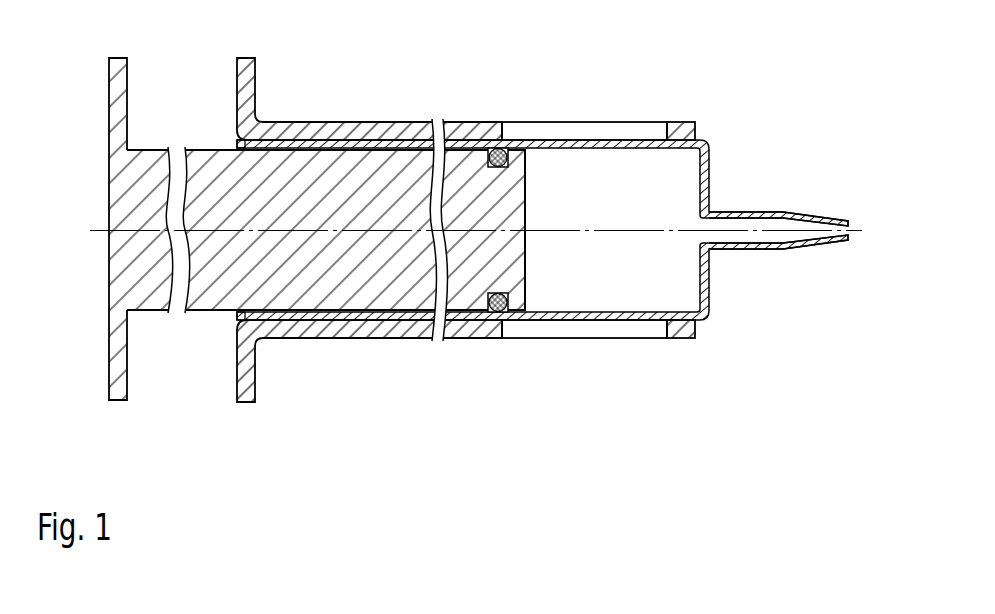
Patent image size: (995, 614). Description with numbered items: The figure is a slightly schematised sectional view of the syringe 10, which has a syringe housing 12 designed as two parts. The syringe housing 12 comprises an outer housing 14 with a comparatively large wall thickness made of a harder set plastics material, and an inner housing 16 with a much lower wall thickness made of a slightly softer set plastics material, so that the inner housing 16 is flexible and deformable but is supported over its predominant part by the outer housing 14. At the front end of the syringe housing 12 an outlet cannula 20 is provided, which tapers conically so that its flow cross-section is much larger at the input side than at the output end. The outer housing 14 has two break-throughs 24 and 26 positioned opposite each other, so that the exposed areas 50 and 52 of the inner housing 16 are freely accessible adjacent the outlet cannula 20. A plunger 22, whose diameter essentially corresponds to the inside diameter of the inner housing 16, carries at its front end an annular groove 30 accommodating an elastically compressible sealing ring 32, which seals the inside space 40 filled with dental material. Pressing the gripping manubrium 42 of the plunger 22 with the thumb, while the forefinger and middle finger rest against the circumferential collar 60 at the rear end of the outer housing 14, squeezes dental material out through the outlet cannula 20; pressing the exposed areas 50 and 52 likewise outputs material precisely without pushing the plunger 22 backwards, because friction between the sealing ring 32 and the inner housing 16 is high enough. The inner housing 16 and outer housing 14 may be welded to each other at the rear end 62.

The syringe 10 is at (792, 138).
The syringe housing 12 is at (466, 202).
The outer housing 14 is at (337, 128).
The inner housing 16 is at (354, 322).
The outlet cannula 20 is at (760, 247).
The plunger 22 is at (293, 286).
The break-through 24 is at (648, 132).
The break-through 26 is at (646, 331).
The annular groove 30 is at (483, 326).
The sealing ring 32 is at (501, 314).
The inside space 40 is at (622, 204).
The gripping manubrium 42 is at (118, 383).
The exposed area 50 is at (589, 126).
The exposed area 52 is at (588, 331).
The collar 60 is at (244, 59).
The rear end 62 is at (237, 323).